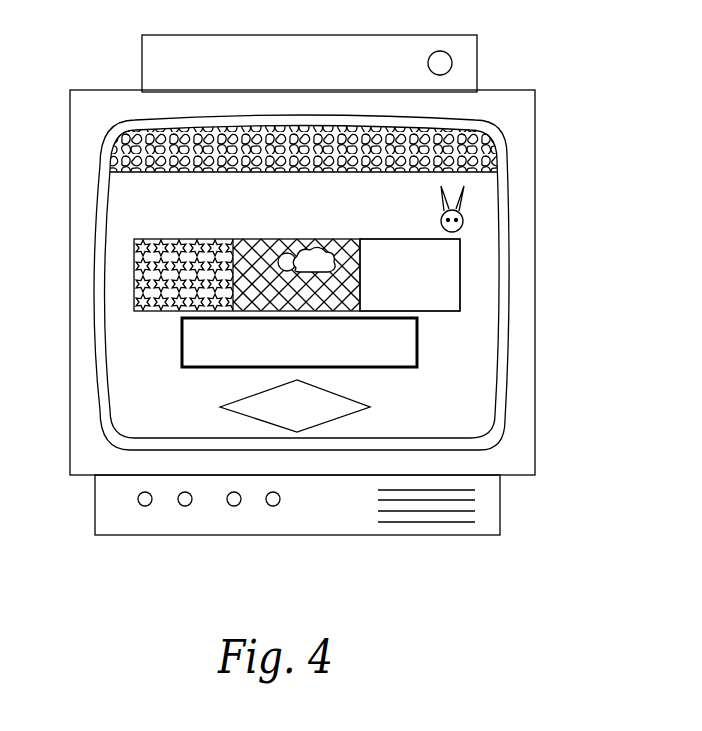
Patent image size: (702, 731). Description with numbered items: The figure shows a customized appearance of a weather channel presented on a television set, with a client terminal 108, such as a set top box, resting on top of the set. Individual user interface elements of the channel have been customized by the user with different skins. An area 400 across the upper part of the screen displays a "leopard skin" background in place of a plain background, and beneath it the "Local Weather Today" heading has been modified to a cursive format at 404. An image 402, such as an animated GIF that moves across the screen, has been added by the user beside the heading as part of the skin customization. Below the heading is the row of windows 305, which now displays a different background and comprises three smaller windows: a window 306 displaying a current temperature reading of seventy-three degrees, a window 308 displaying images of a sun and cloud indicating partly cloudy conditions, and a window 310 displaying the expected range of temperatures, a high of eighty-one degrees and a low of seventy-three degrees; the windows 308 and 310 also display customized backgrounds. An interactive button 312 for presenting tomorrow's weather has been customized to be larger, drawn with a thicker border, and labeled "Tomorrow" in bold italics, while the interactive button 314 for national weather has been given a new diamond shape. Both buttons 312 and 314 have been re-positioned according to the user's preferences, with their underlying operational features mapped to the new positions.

The client terminal 108 is at (477, 62).
The area 400 is at (492, 163).
The cursive format heading 404 is at (165, 198).
The image 402 is at (465, 222).
The row of windows 305 is at (133, 258).
The window 306 is at (135, 286).
The window 308 is at (292, 255).
The window 310 is at (455, 273).
The interactive button 312 is at (183, 334).
The interactive button 314 is at (372, 405).